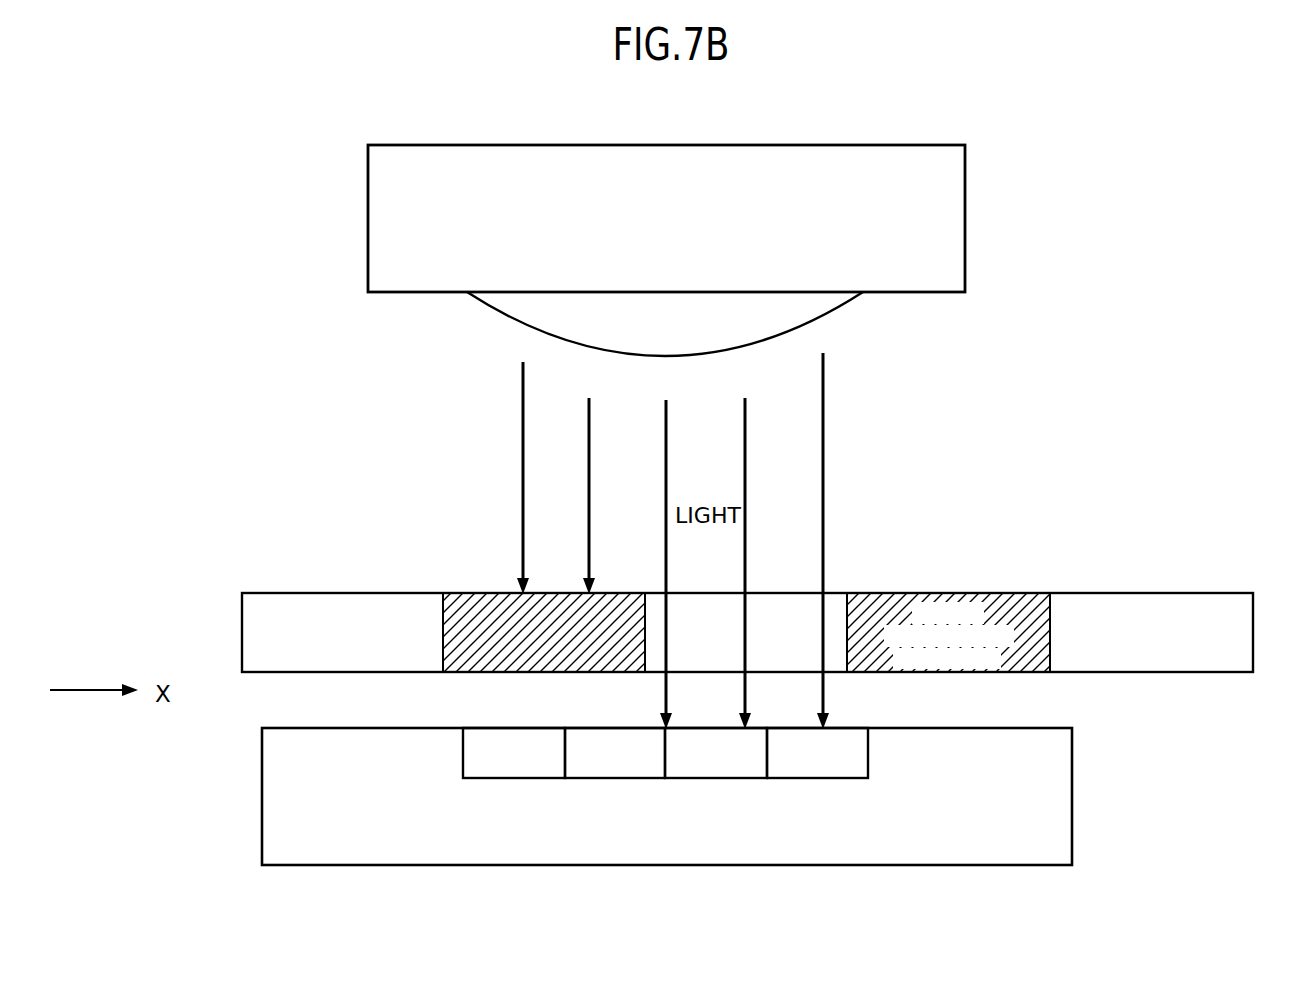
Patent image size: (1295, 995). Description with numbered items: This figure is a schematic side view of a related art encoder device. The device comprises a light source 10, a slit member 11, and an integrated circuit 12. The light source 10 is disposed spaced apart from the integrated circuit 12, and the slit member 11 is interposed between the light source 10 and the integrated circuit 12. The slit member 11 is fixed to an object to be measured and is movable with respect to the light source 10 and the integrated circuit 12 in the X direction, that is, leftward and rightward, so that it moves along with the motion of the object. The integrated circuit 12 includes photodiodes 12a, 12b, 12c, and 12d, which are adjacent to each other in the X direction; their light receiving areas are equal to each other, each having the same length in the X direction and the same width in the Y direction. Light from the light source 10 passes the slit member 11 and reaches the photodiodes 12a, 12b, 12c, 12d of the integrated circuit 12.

The light source 10 is at (966, 256).
The slit member 11 is at (1254, 636).
The integrated circuit 12 is at (1073, 822).
The photodiode 12a is at (497, 728).
The photodiode 12b is at (630, 728).
The photodiode 12c is at (704, 728).
The photodiode 12d is at (848, 728).